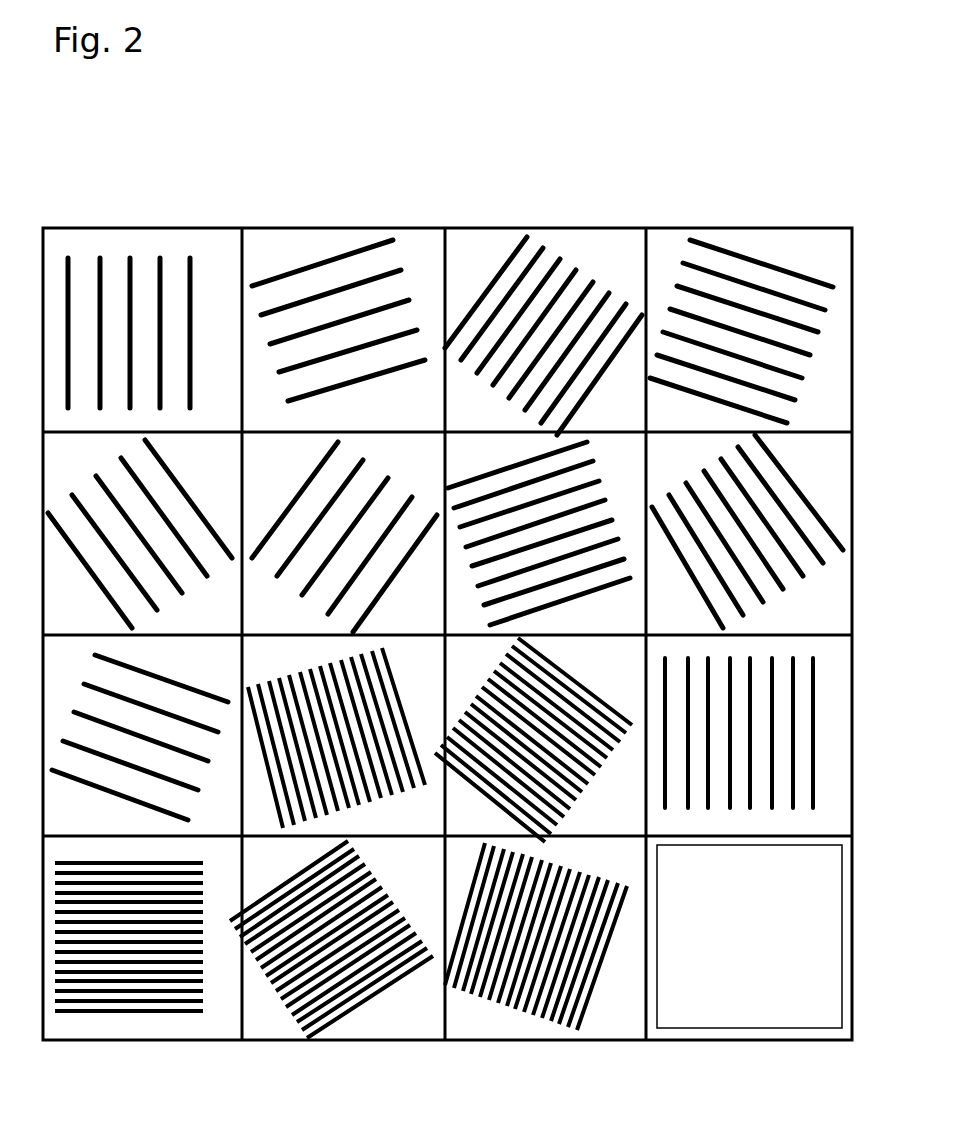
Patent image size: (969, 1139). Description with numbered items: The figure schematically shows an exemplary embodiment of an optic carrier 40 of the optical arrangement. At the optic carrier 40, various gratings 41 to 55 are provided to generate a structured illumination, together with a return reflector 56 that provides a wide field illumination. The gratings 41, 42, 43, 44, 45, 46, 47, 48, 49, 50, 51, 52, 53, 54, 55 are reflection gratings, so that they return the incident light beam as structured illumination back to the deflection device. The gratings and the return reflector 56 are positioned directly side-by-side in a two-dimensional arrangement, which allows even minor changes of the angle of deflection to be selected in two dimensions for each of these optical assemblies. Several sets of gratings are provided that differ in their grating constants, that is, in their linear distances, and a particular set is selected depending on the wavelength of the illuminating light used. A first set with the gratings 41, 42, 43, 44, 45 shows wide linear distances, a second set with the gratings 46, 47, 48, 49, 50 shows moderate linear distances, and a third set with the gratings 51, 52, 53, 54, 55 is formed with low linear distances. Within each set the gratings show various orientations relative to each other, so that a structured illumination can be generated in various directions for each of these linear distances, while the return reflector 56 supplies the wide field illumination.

The optic carrier 40 is at (554, 200).
The grating 41 is at (232, 268).
The grating 42 is at (212, 476).
The grating 43 is at (204, 668).
The grating 44 is at (412, 407).
The grating 45 is at (419, 468).
The grating 46 is at (616, 265).
The grating 47 is at (837, 405).
The grating 48 is at (479, 465).
The grating 49 is at (826, 465).
The grating 50 is at (781, 655).
The grating 51 is at (421, 671).
The grating 52 is at (604, 668).
The grating 53 is at (161, 1033).
The grating 54 is at (411, 871).
The grating 55 is at (616, 864).
The return reflector 56 is at (737, 879).